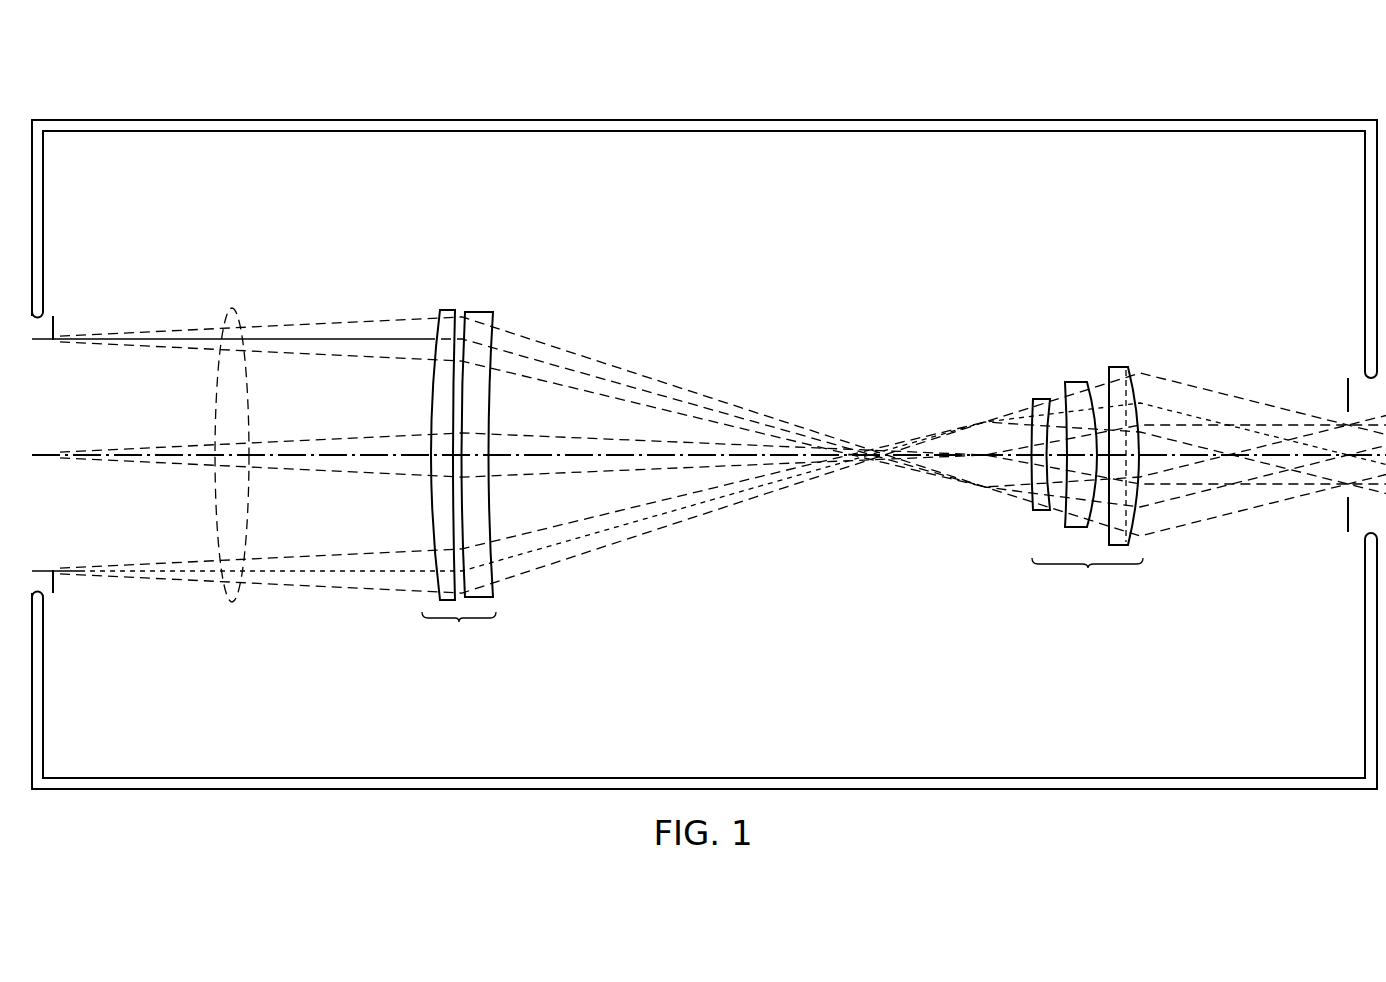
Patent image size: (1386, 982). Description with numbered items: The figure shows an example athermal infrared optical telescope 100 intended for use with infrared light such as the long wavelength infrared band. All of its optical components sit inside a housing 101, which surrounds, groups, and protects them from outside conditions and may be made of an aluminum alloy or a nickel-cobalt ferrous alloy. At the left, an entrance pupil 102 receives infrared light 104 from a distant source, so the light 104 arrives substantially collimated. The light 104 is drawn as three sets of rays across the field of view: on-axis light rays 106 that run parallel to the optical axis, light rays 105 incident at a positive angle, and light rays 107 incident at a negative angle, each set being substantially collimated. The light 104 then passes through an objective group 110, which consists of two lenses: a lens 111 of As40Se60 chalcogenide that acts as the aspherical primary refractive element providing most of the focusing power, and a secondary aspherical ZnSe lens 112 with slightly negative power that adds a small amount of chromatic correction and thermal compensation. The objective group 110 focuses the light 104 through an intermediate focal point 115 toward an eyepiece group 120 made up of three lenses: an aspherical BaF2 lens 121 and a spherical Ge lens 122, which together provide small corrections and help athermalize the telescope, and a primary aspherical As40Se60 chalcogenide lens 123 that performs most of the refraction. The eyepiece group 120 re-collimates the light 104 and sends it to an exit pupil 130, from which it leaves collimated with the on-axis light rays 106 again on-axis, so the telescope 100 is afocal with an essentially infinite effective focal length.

The athermal infrared optical telescope 100 is at (346, 78).
The housing 101 is at (682, 116).
The entrance pupil 102 is at (58, 328).
The infrared light 104 is at (228, 314).
The light rays incident at a positive angle 105 is at (310, 322).
The on-axis light rays 106 is at (383, 339).
The light rays incident at a negative angle 107 is at (332, 356).
The objective group 110 is at (459, 469).
The lens 111 is at (445, 309).
The lens 112 is at (479, 311).
The intermediate focal point 115 is at (991, 462).
The eyepiece group 120 is at (1088, 466).
The lens 121 is at (1049, 398).
The lens 122 is at (1073, 382).
The lens 123 is at (1118, 366).
The exit pupil 130 is at (1347, 394).